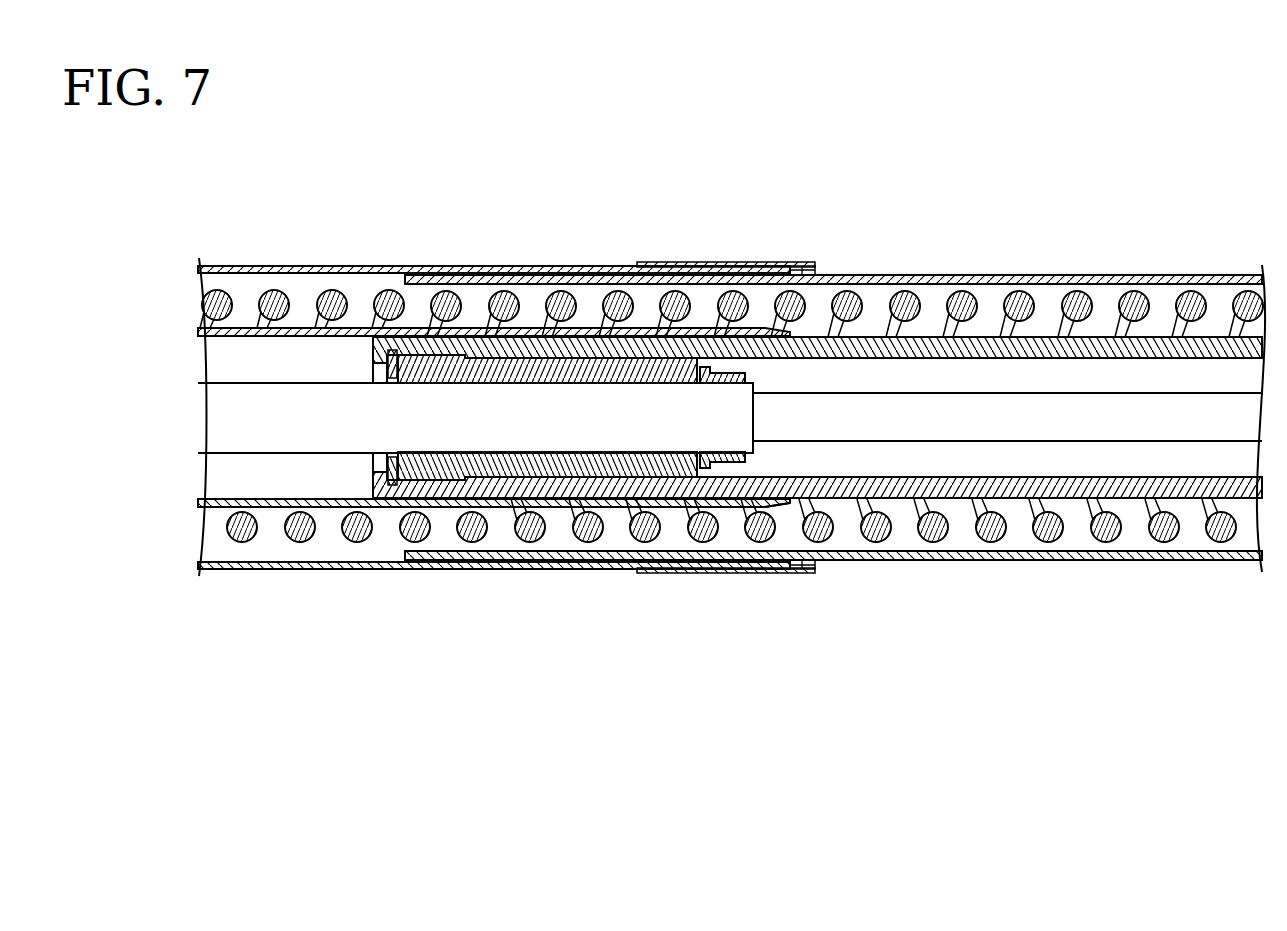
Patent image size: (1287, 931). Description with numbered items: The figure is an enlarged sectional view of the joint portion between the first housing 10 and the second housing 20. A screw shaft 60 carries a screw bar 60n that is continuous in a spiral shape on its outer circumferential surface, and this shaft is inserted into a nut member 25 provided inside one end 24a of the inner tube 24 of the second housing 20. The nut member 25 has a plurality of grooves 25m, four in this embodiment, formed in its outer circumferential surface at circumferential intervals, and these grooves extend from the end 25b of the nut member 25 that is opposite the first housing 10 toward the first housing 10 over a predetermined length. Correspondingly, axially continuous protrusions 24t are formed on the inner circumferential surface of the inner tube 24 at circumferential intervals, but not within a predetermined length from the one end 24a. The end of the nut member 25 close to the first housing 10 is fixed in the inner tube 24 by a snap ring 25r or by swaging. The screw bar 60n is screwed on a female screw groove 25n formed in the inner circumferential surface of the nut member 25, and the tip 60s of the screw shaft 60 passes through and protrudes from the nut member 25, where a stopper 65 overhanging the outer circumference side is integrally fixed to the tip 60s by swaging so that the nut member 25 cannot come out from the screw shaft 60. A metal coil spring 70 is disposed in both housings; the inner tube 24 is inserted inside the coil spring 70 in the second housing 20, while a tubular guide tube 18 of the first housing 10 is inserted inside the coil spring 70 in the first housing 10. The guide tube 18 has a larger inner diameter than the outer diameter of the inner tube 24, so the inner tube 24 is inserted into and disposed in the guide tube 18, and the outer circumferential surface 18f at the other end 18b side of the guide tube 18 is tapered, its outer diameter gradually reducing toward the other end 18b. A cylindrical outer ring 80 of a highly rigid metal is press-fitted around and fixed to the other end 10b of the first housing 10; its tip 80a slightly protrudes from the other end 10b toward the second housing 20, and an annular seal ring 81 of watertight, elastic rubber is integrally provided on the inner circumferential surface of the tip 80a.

The first housing 10 is at (243, 258).
The other end of the first housing 10b is at (785, 266).
The guide tube 18 is at (297, 328).
The other end of the guide tube 18b is at (680, 506).
The outer circumferential surface of the guide tube 18f is at (768, 507).
The second housing 20 is at (1113, 268).
The inner tube 24 is at (1027, 497).
The one end of the inner tube 24a is at (454, 492).
The protrusions 24t is at (506, 360).
The nut member 25 is at (560, 350).
The end of the nut member 25b is at (688, 366).
The grooves 25m is at (614, 357).
The female screw groove 25n is at (496, 452).
The snap ring 25r is at (391, 478).
The screw shaft 60 is at (356, 397).
The screw bar 60n is at (344, 455).
The tip of the screw shaft 60s is at (740, 417).
The stopper 65 is at (728, 373).
The coil spring 70 is at (1018, 300).
The outer ring 80 is at (797, 262).
The tip of the outer ring 80a is at (816, 265).
The seal ring 81 is at (818, 271).